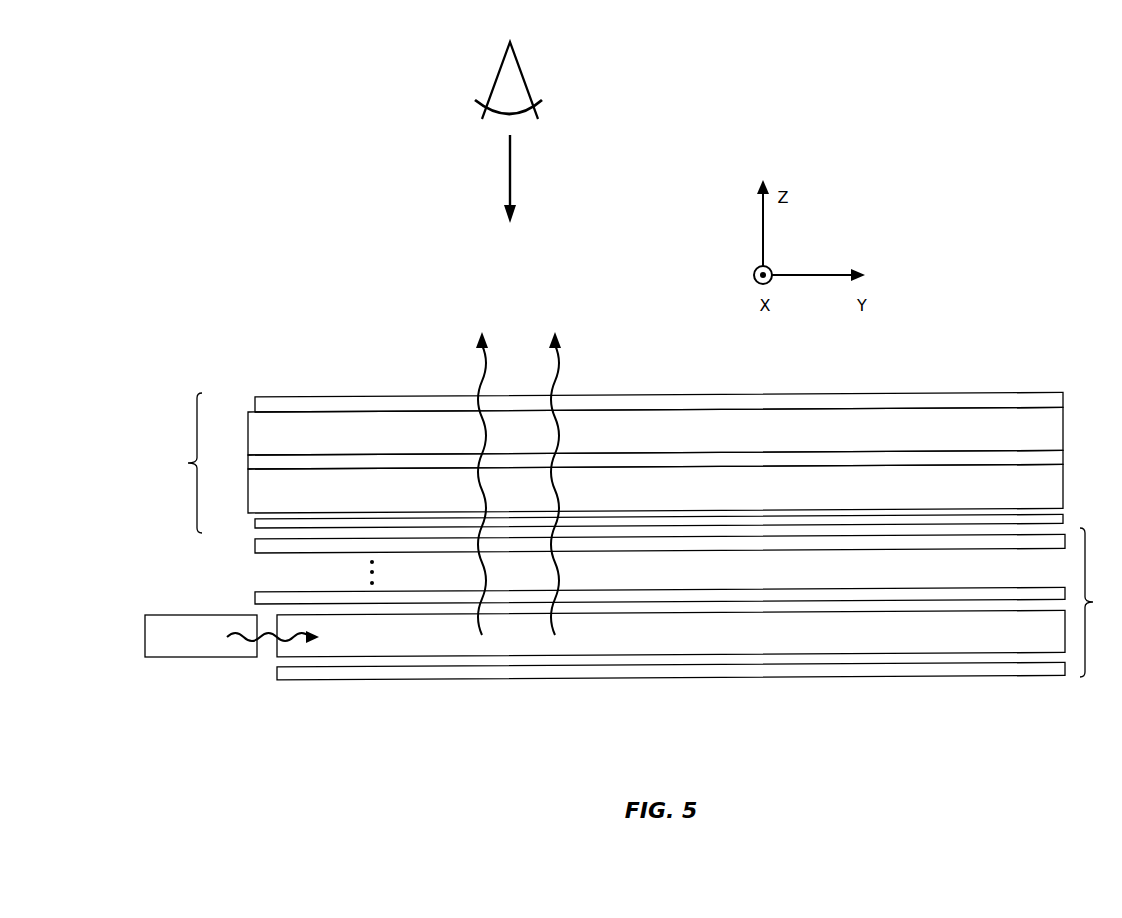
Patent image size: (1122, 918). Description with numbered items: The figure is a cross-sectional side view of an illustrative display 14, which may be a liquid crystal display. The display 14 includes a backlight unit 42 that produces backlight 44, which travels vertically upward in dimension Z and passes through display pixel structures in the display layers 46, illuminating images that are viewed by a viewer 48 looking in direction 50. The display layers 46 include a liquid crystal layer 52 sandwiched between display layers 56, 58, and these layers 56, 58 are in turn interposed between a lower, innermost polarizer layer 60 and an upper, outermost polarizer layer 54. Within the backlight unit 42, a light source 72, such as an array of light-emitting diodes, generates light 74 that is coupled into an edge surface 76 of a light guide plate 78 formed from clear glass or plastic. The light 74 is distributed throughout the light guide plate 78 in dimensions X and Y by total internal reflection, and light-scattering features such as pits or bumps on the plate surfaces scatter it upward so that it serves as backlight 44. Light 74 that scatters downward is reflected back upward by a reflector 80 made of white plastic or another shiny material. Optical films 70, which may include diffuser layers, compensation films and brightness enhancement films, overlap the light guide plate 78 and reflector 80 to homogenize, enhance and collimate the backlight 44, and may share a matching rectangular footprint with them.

The display 14 is at (1027, 225).
The backlight unit 42 is at (659, 632).
The backlight 44 is at (550, 372).
The display layers 46 is at (613, 453).
The viewer 48 is at (524, 76).
The direction 50 is at (511, 183).
The liquid crystal layer 52 is at (326, 460).
The upper polarizer layer 54 is at (277, 405).
The display layer 56 is at (257, 433).
The display layer 58 is at (257, 486).
The lower polarizer layer 60 is at (253, 523).
The optical films 70 is at (257, 545).
The light source 72 is at (155, 638).
The light 74 is at (240, 634).
The edge surface 76 is at (277, 648).
The light guide plate 78 is at (368, 650).
The reflector 80 is at (455, 676).